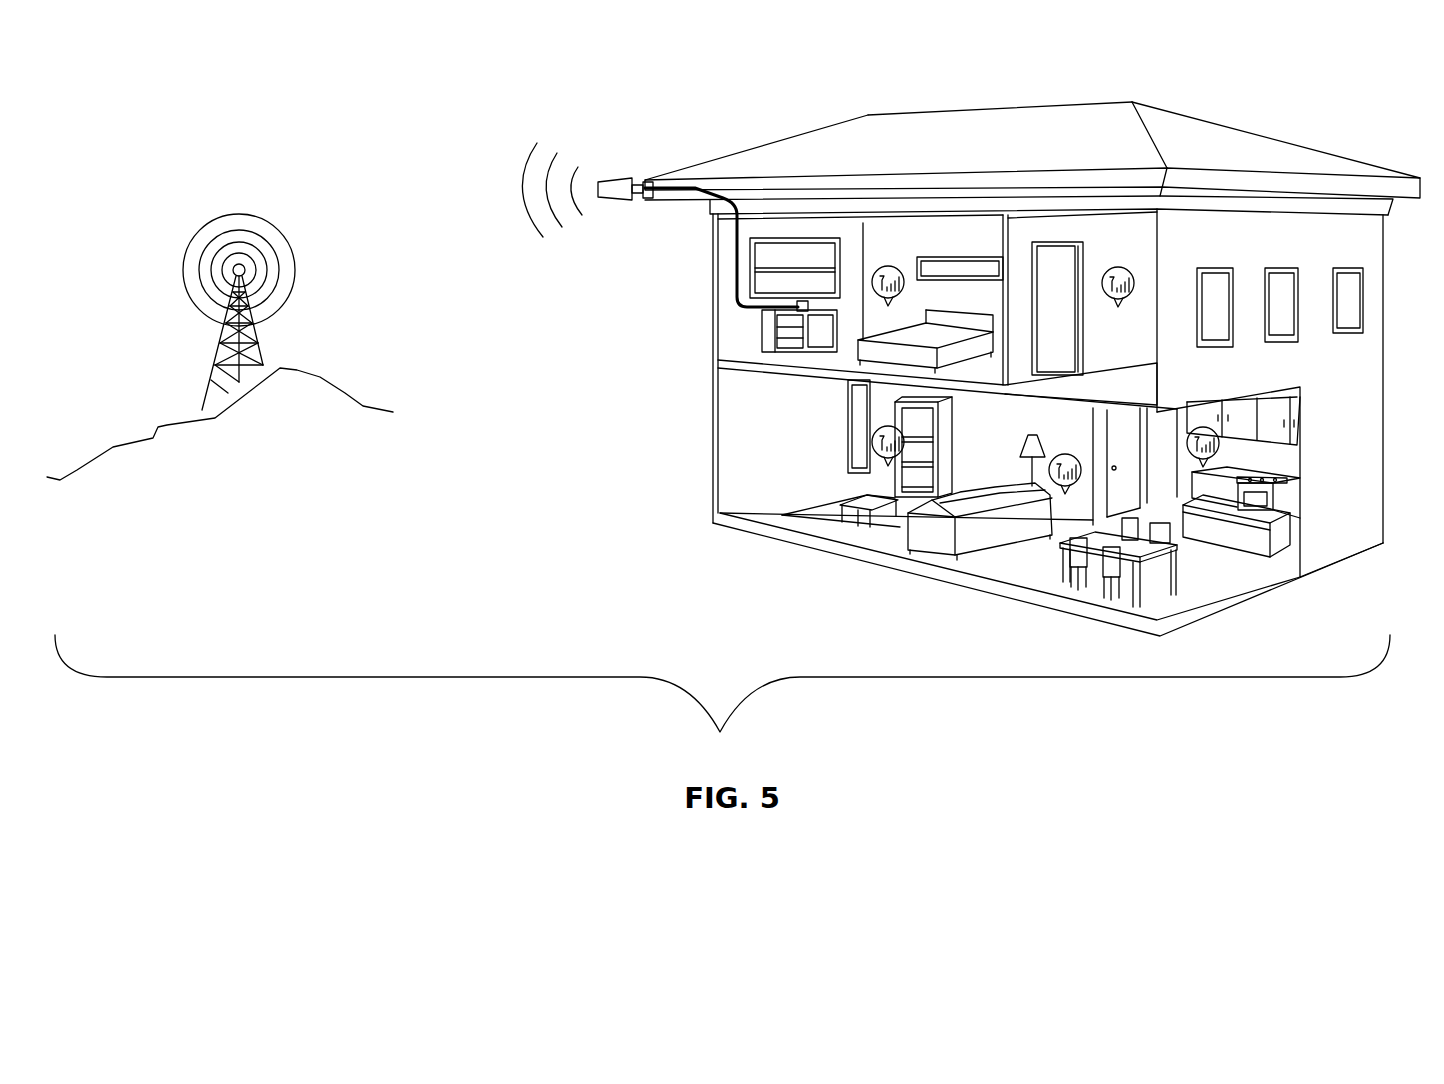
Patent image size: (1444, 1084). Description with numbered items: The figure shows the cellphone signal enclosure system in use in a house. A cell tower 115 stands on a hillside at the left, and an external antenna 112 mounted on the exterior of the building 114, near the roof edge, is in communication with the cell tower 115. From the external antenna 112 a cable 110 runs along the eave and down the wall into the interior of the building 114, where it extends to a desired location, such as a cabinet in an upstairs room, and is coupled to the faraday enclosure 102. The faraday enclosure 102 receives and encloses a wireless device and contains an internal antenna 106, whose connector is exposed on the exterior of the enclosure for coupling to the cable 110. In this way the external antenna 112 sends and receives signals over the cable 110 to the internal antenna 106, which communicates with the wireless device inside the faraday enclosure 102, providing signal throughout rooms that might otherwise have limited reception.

The faraday enclosure 102 is at (798, 309).
The internal antenna 106 is at (760, 318).
The cable 110 is at (737, 267).
The external antenna 112 is at (613, 178).
The building 114 is at (960, 127).
The cell tower 115 is at (222, 348).